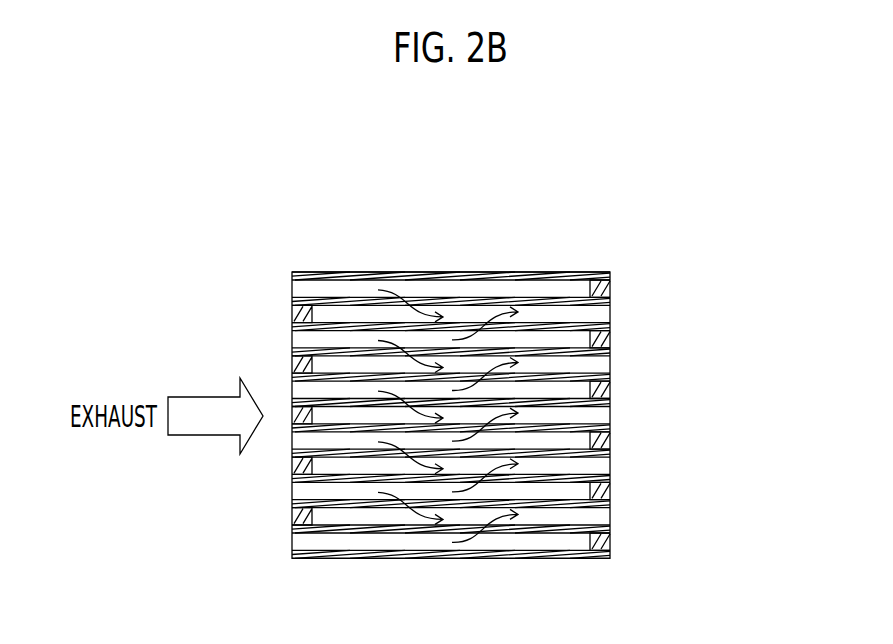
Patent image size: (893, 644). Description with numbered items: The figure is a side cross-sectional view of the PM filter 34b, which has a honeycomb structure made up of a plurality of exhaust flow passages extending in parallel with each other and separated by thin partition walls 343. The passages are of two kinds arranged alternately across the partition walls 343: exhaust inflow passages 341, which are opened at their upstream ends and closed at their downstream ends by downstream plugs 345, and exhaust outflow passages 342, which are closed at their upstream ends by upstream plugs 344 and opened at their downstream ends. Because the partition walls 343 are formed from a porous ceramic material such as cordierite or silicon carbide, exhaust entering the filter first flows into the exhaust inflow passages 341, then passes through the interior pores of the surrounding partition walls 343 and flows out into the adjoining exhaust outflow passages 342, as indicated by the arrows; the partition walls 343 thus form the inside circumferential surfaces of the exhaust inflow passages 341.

The PM filter 34b is at (585, 182).
The exhaust inflow passage 341 is at (362, 492).
The exhaust outflow passage 342 is at (343, 360).
The partition wall 343 is at (452, 297).
The upstream plug 344 is at (290, 362).
The downstream plug 345 is at (608, 340).